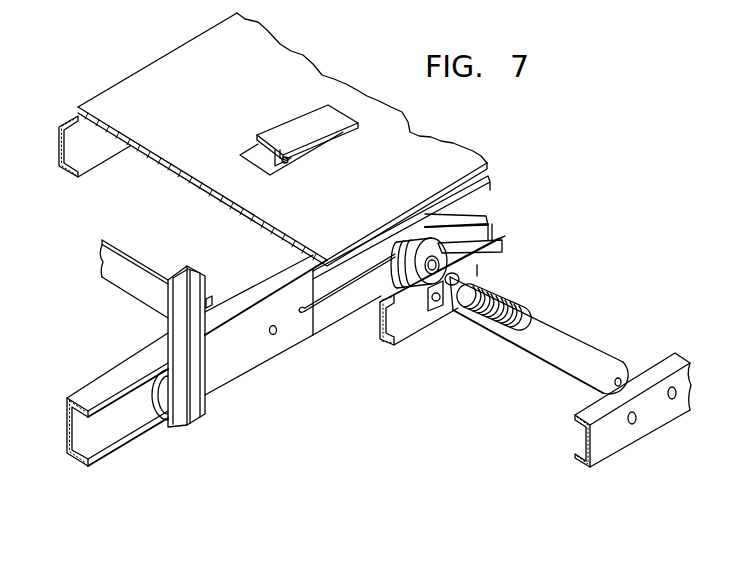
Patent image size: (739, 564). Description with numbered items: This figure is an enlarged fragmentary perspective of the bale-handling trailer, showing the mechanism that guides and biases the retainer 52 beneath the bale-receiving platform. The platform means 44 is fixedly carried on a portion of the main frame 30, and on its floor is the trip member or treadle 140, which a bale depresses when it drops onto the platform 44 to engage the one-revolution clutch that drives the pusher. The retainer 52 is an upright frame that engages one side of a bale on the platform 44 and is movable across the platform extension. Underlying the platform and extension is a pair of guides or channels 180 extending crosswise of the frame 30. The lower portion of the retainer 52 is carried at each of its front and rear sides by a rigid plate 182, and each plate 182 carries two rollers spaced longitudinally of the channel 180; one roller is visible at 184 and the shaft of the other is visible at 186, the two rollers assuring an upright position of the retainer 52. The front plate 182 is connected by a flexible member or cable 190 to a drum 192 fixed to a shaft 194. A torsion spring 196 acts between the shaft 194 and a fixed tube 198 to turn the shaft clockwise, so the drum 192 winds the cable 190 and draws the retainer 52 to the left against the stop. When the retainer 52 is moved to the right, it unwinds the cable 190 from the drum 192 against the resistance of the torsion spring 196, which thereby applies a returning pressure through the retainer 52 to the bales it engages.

The main frame 30 is at (61, 446).
The platform means 44 is at (410, 137).
The retainer 52 is at (138, 260).
The trip member or treadle 140 is at (292, 125).
The guides or channels 180 is at (62, 133).
The rigid plate 182 is at (247, 372).
The roller 184 is at (160, 420).
The shaft of the other roller 186 is at (277, 336).
The flexible member or cable 190 is at (355, 285).
The drum 192 is at (440, 246).
The shaft 194 is at (627, 372).
The torsion spring 196 is at (505, 305).
The fixed tube 198 is at (542, 328).